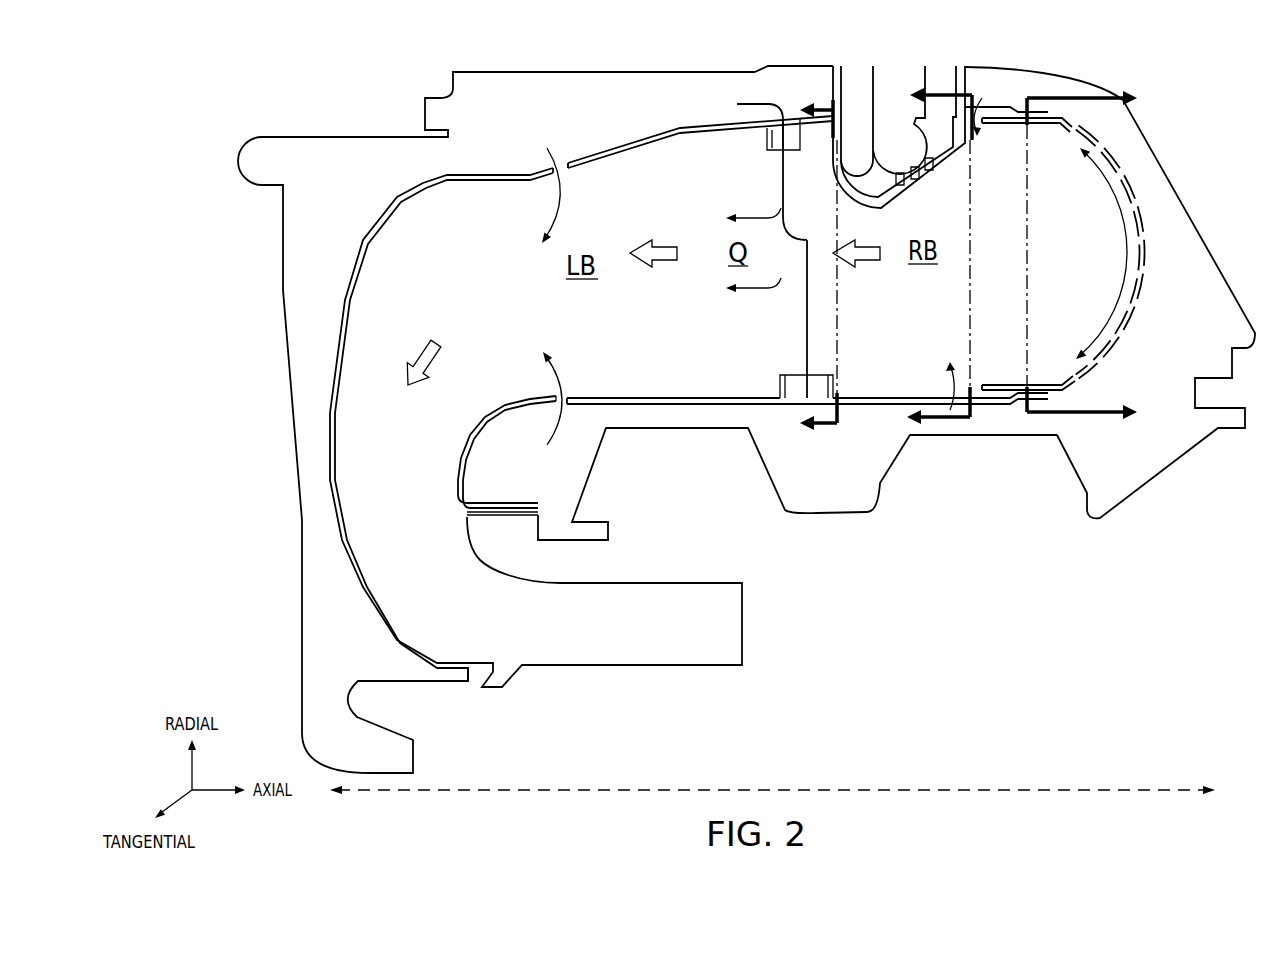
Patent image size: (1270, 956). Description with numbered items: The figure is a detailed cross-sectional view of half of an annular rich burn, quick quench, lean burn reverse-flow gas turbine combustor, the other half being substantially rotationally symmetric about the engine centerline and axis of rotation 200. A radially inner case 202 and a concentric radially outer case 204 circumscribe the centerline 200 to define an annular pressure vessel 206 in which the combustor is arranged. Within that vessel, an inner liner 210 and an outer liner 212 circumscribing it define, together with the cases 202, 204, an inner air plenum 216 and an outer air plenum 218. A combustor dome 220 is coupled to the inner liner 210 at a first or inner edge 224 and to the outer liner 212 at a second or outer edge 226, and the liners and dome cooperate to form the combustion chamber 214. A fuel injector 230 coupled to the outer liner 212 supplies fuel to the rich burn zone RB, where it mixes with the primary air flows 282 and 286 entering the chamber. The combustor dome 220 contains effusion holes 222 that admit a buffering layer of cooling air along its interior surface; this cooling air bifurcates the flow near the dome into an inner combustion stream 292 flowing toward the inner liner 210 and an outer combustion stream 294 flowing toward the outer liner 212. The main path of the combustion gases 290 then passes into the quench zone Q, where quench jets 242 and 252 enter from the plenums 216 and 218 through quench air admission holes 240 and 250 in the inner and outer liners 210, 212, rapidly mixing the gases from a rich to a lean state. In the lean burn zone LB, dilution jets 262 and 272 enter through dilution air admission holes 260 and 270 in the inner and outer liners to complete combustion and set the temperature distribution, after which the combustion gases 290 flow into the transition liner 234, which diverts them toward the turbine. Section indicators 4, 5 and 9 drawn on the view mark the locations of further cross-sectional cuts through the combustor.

The centerline and axis of rotation 200 is at (958, 787).
The radially inner case 202 is at (682, 428).
The radially outer case 204 is at (578, 72).
The annular pressure vessel 206 is at (503, 87).
The inner liner 210 is at (715, 406).
The outer liner 212 is at (580, 156).
The combustion chamber 214 is at (488, 294).
The inner air plenum 216 is at (648, 410).
The outer air plenum 218 is at (690, 85).
The combustor dome 220 is at (1127, 183).
The effusion holes 222 is at (1142, 235).
The first (inner) edge 224 is at (1048, 393).
The second (outer) edge 226 is at (1046, 113).
The fuel injector 230 is at (900, 72).
The transition liner 234 is at (330, 430).
The quench air admission holes 240 is at (790, 390).
The quench jets 242 is at (806, 320).
The quench air admission holes 250 is at (775, 140).
The quench jets 252 is at (782, 177).
The dilution air admission holes 260 is at (570, 395).
The dilution jets 262 is at (563, 428).
The dilution air admission holes 270 is at (560, 193).
The dilution jets 272 is at (550, 157).
The air flow (primary air jet) 282 is at (946, 373).
The air flow (primary air jet) 286 is at (978, 140).
The combustion gases 290 is at (670, 240).
The inner combustion stream 292 is at (1110, 325).
The outer combustion stream 294 is at (1112, 188).
The section line FIG. 4 is at (926, 255).
The section line FIG. 5 is at (1094, 254).
The section line FIG. 9 is at (812, 273).